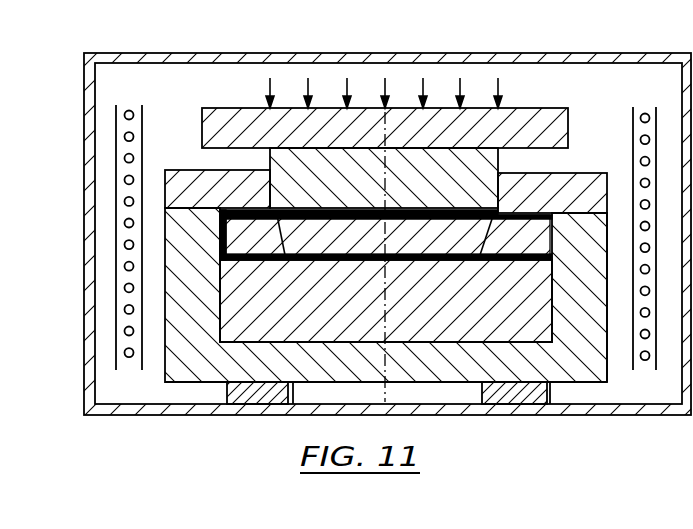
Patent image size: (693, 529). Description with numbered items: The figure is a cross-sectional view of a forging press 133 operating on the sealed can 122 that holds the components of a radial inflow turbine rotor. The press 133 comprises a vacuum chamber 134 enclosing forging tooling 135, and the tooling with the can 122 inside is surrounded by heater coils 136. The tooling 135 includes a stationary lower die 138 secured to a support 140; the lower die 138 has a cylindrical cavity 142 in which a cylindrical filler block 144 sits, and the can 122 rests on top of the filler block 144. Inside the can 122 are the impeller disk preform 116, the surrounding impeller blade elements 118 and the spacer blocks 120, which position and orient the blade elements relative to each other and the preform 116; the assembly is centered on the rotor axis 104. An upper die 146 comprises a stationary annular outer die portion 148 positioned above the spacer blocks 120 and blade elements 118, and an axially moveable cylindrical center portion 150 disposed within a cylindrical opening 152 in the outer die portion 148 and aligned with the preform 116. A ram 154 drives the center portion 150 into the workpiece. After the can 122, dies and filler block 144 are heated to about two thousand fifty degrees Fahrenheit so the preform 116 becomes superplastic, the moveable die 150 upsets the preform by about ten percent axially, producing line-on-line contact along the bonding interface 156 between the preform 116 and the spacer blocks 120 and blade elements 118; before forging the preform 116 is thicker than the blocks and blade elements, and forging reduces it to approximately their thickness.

The axis 104 is at (381, 245).
The impeller disk preform 116 is at (354, 243).
The impeller blade elements 118 is at (498, 250).
The spacer blocks 120 is at (241, 242).
The can 122 is at (397, 262).
The forging press 133 is at (580, 49).
The vacuum chamber 134 is at (113, 80).
The forging tooling 135 is at (614, 380).
The heater coils 136 is at (128, 110).
The lower die 138 is at (472, 370).
The support 140 is at (250, 396).
The cylindrical cavity 142 is at (220, 318).
The filler block 144 is at (344, 317).
The upper die 146 is at (587, 168).
The outer die portion 148 is at (165, 188).
The center portion 150 is at (352, 187).
The cylindrical opening 152 is at (272, 184).
The ram 154 is at (336, 137).
The bonding interface 156 is at (477, 228).